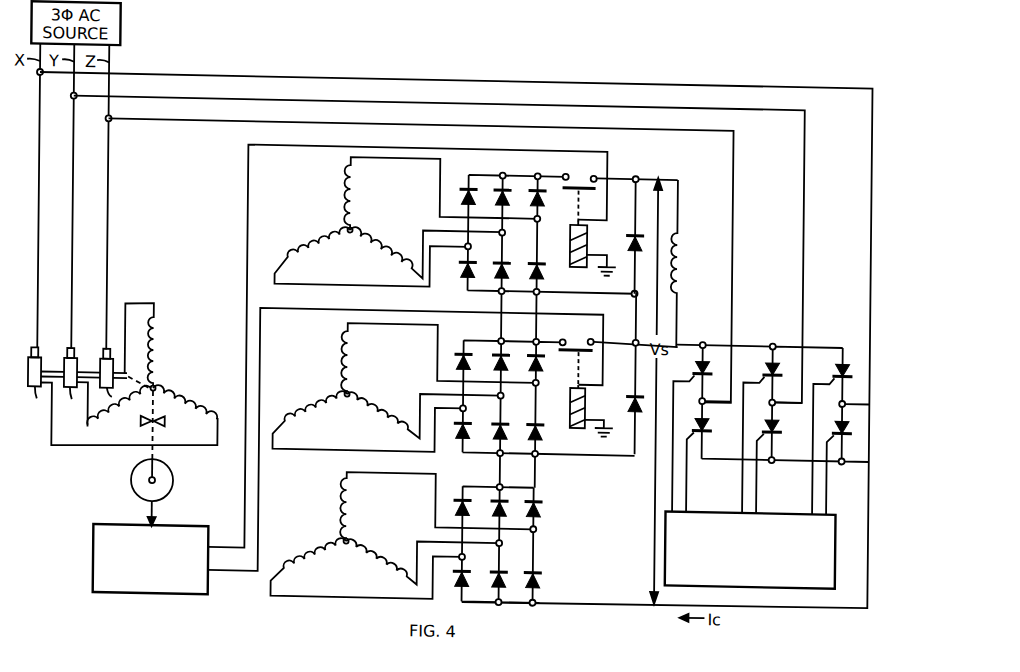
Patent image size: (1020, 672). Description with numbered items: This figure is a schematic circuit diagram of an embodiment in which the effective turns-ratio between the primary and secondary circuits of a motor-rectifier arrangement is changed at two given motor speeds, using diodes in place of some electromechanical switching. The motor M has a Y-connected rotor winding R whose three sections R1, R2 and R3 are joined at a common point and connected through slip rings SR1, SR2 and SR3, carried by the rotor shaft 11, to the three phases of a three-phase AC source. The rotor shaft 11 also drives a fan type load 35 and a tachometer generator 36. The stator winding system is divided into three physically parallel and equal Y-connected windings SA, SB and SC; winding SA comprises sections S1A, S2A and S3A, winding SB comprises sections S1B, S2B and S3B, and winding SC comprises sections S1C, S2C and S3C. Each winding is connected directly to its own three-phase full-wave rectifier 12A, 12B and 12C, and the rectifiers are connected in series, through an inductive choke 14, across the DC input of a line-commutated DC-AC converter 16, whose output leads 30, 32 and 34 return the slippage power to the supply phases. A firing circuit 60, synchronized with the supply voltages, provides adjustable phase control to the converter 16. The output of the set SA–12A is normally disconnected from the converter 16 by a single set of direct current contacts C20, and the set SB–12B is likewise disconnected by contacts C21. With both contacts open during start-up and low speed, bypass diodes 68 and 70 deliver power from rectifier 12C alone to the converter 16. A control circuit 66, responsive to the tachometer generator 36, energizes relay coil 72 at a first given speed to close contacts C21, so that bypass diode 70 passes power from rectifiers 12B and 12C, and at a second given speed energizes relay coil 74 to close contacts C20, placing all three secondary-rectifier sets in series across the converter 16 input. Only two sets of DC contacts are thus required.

The rotor shaft 11 is at (131, 352).
The output rectifier 12A is at (560, 170).
The output rectifier 12B is at (556, 338).
The output rectifier 12C is at (564, 484).
The inductive choke 14 is at (684, 266).
The DC-AC converter 16 is at (813, 346).
The output lead 30 is at (734, 208).
The output lead 32 is at (806, 205).
The output lead 34 is at (889, 180).
The fan type load 35 is at (163, 425).
The tachometer generator 36 is at (174, 474).
The firing circuit 60 is at (764, 589).
The control circuit 66 is at (94, 567).
The bypass diode 68 is at (607, 424).
The bypass diode 70 is at (608, 263).
The relay coil 72 is at (628, 412).
The relay coil 74 is at (588, 242).
The motor M is at (194, 302).
The rotor winding R is at (185, 382).
The rotor winding section R1 is at (189, 401).
The rotor winding section R2 is at (131, 421).
The rotor winding section R3 is at (157, 345).
The slip ring SR1 is at (26, 383).
The slip ring SR2 is at (72, 385).
The slip ring SR3 is at (111, 383).
The stator winding SA is at (311, 198).
The stator winding SB is at (304, 360).
The stator winding SC is at (311, 499).
The stator winding section S1A is at (352, 194).
The stator winding section S2A is at (393, 232).
The stator winding section S3A is at (317, 234).
The stator winding section S1B is at (352, 358).
The stator winding section S2B is at (391, 397).
The stator winding section S3B is at (314, 400).
The stator winding section S1C is at (352, 505).
The stator winding section S2C is at (384, 553).
The stator winding section S3C is at (318, 544).
The direct current contacts C20 is at (579, 183).
The direct current contacts C21 is at (576, 347).